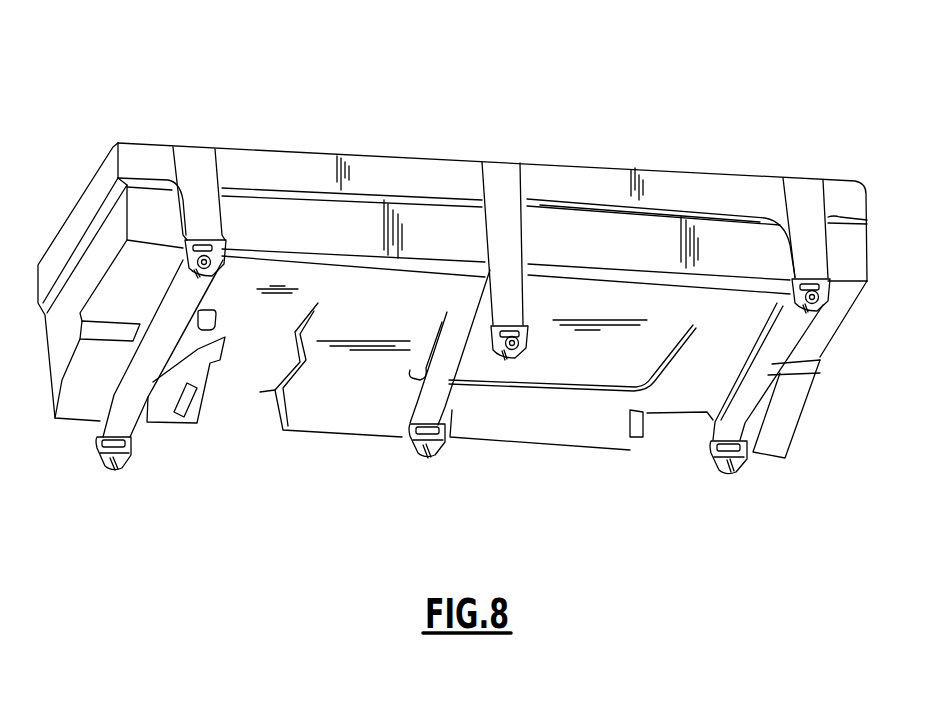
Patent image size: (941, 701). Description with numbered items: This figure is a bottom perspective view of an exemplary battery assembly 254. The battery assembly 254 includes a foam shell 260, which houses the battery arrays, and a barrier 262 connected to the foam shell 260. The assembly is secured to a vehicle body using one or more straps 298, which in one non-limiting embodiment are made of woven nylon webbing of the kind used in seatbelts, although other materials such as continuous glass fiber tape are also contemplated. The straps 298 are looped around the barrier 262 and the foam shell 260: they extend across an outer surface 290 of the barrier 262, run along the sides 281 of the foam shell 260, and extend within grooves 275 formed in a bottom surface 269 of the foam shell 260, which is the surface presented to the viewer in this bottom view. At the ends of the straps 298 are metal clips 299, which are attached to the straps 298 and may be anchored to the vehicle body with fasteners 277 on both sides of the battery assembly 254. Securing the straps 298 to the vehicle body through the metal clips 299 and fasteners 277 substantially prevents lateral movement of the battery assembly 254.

The battery assembly 254 is at (488, 92).
The foam shell 260 is at (848, 267).
The barrier 262 is at (720, 187).
The bottom surface 269 is at (398, 337).
The grooves 275 is at (205, 292).
The fasteners 277 is at (198, 272).
The sides 281 is at (352, 233).
The outer surface 290 is at (289, 150).
The straps 298 is at (193, 160).
The metal clips 299 is at (520, 338).